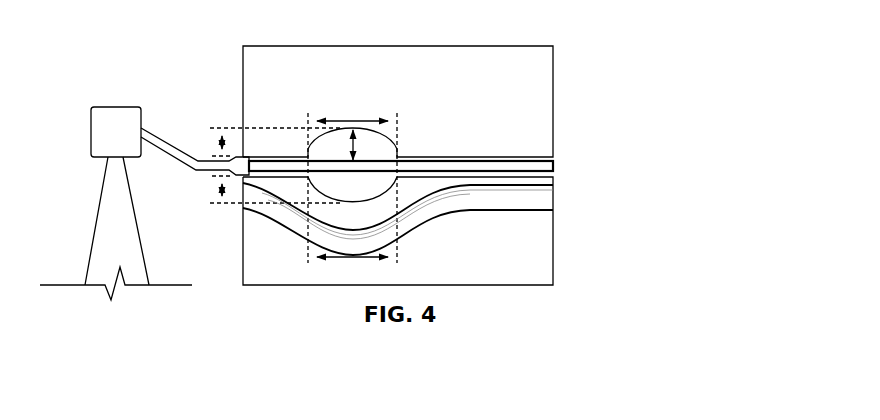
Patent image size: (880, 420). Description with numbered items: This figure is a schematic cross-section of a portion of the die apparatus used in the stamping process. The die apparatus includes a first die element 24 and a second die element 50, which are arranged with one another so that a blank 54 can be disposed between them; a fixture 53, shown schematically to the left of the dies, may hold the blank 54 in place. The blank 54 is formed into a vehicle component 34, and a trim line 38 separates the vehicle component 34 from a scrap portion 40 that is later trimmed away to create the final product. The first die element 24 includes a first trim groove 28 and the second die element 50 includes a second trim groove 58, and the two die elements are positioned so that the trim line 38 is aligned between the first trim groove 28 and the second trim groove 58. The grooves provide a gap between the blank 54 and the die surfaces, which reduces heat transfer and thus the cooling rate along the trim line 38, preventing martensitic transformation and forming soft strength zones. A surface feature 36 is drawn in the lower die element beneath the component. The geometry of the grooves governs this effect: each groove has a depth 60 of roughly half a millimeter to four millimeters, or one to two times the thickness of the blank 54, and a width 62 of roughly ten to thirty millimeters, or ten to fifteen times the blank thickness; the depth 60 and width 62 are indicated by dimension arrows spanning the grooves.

The actuator 53 is at (112, 107).
The second die element 50 is at (549, 108).
The first die element 24 is at (548, 268).
The blank 54 is at (549, 165).
The second trim groove 58 is at (398, 143).
The trim line 38 is at (355, 163).
The vehicle component 34 is at (487, 161).
The width 62 is at (353, 119).
The depth 60 is at (218, 138).
The scrap portion 40 is at (257, 171).
The first trim groove 28 is at (316, 188).
The membrane 36 is at (472, 212).